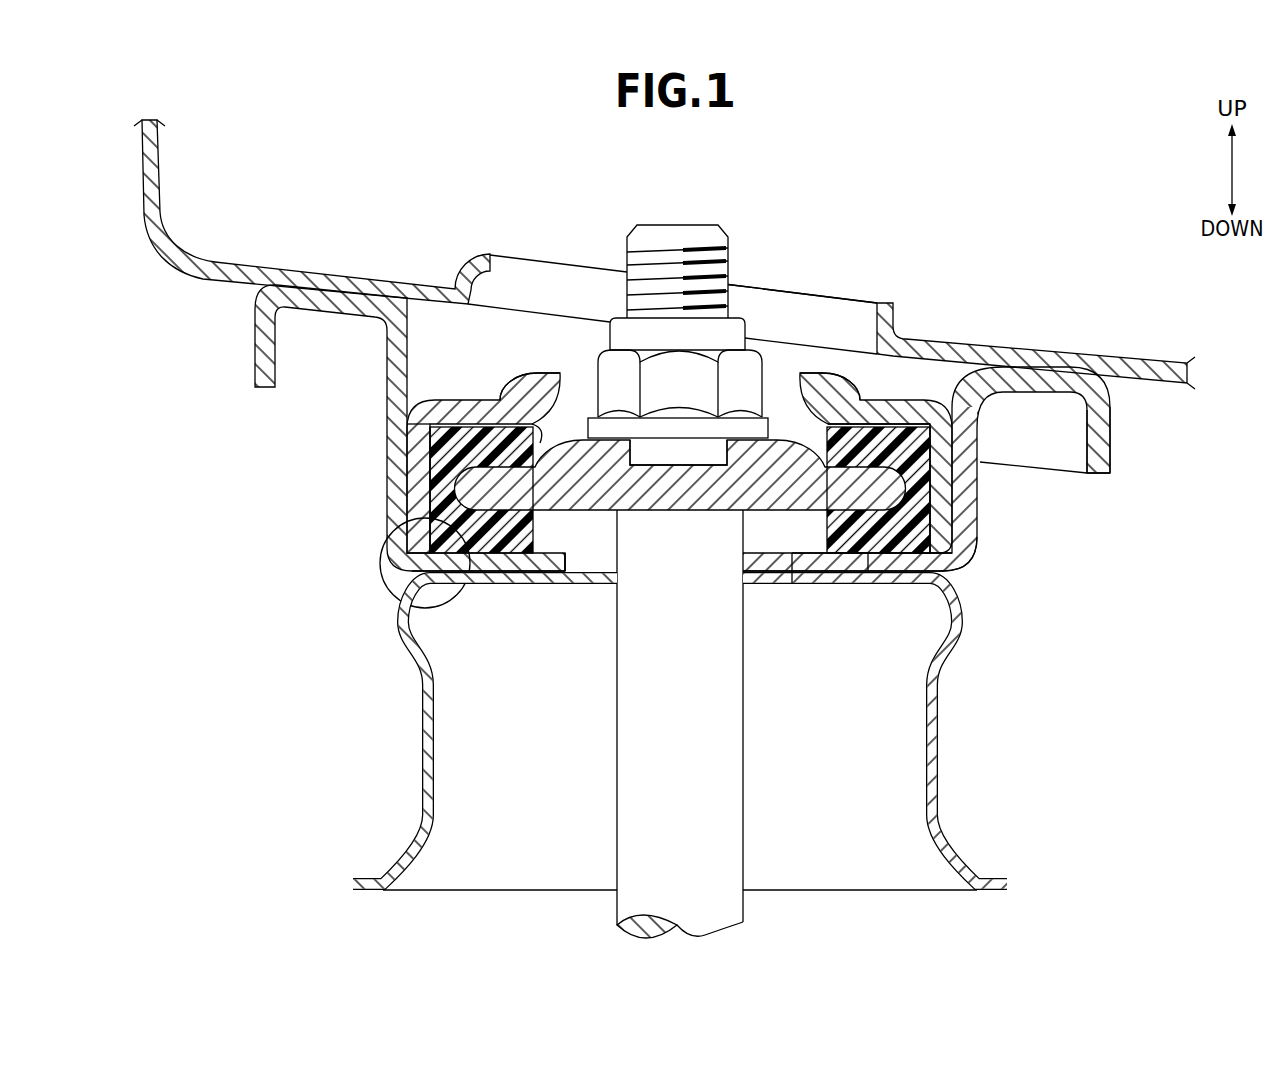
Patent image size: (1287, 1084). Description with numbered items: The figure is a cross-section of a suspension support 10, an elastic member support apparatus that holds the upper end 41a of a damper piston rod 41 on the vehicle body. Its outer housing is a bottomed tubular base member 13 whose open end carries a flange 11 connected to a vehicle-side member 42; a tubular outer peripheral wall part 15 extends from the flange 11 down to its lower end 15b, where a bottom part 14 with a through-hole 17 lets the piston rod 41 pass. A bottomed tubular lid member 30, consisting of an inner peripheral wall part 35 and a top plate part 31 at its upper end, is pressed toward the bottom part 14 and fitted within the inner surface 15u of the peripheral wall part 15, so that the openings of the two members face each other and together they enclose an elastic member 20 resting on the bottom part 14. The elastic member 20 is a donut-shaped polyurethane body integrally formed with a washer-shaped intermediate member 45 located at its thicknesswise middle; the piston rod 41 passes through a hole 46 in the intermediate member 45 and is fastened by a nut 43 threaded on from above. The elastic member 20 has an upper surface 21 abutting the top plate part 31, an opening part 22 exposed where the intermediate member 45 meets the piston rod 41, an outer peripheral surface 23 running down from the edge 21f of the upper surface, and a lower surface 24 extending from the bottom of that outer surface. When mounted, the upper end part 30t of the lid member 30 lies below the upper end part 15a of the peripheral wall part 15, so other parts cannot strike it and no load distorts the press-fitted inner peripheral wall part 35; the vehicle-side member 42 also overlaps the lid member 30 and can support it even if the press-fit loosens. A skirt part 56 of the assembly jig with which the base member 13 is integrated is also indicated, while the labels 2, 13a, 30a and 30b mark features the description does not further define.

The detail region of FIG. 2 is at (376, 588).
The suspension support 10 is at (983, 218).
The flange 11 is at (1042, 380).
The base member 13 is at (983, 548).
The bracket flange 13a is at (1100, 488).
The bottom part 14 is at (832, 560).
The peripheral wall part 15 is at (967, 522).
The upper end part of the peripheral wall part 15a is at (347, 285).
The lower end of the peripheral wall part 15b is at (960, 577).
The inner surface 15u is at (982, 545).
The through-hole 17 is at (792, 560).
The elastic member 20 is at (868, 563).
The upper surface 21 is at (463, 407).
The edge of the upper surface 21f is at (410, 424).
The opening part 22 is at (547, 433).
The outer peripheral surface 23 is at (425, 462).
The lower surface 24 is at (487, 574).
The lid member 30 is at (848, 388).
The bracket upper portion 30a is at (838, 396).
The upper end part of the lid member 30t is at (838, 396).
The bracket bottom flange 30b is at (403, 543).
The top plate part 31 is at (893, 407).
The inner peripheral wall part 35 is at (948, 486).
The piston rod 41 is at (680, 752).
The upper end of the piston rod 41a is at (673, 233).
The vehicle-side member 42 is at (1117, 362).
The nut 43 is at (613, 363).
The intermediate member 45 is at (591, 520).
The hole 46 is at (720, 478).
The skirt part 56 is at (946, 755).